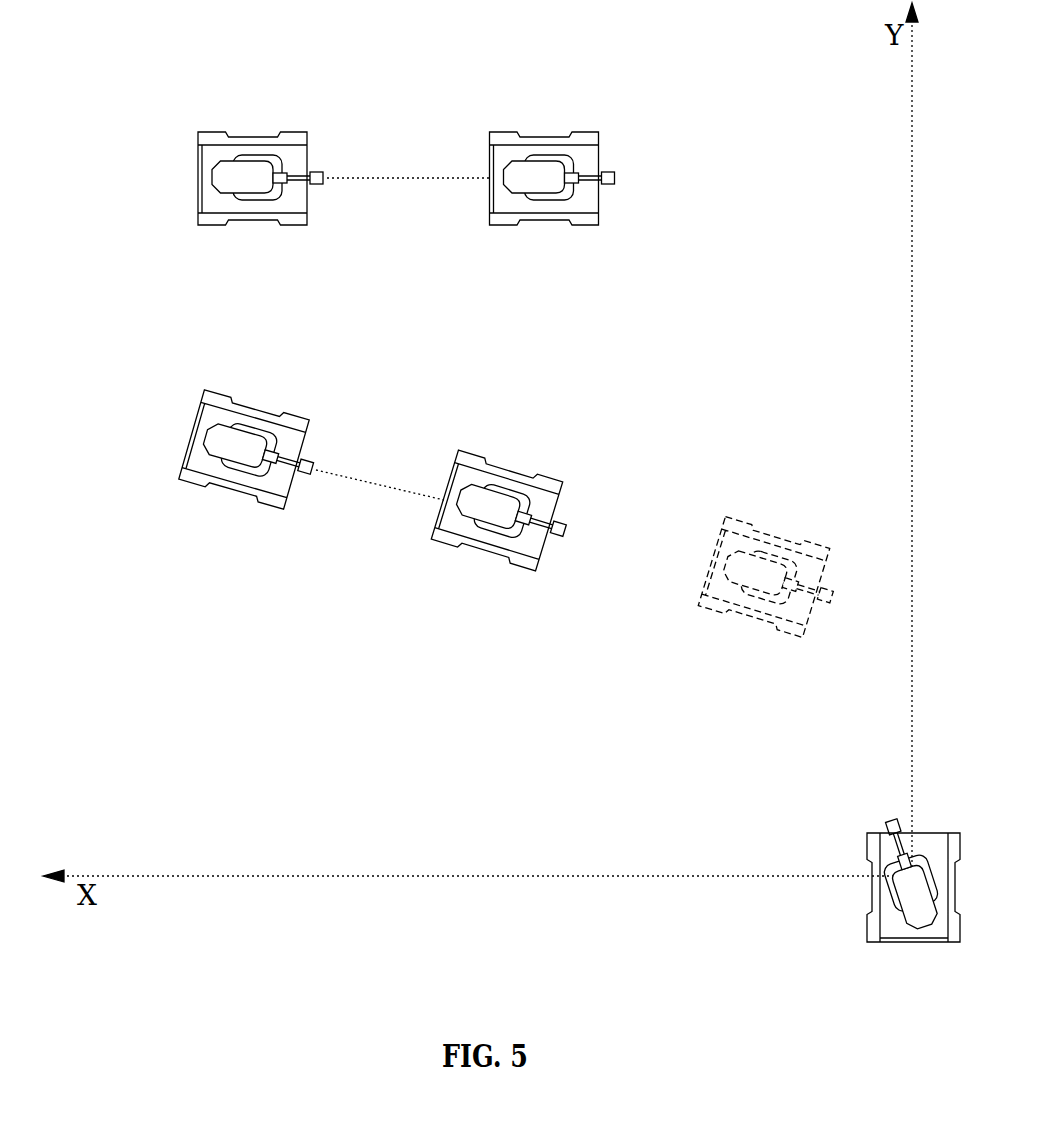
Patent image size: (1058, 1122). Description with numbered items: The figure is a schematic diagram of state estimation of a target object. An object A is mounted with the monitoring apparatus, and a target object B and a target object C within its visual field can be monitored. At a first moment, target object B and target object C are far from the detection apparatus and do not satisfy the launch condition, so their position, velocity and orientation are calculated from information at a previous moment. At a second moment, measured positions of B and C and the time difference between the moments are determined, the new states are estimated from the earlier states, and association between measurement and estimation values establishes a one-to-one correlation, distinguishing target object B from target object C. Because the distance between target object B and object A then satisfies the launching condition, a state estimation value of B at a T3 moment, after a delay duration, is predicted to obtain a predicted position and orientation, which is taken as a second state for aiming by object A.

The object A is at (887, 878).
The target object B is at (417, 465).
The target object C is at (409, 151).
The T3 moment T3 is at (794, 558).